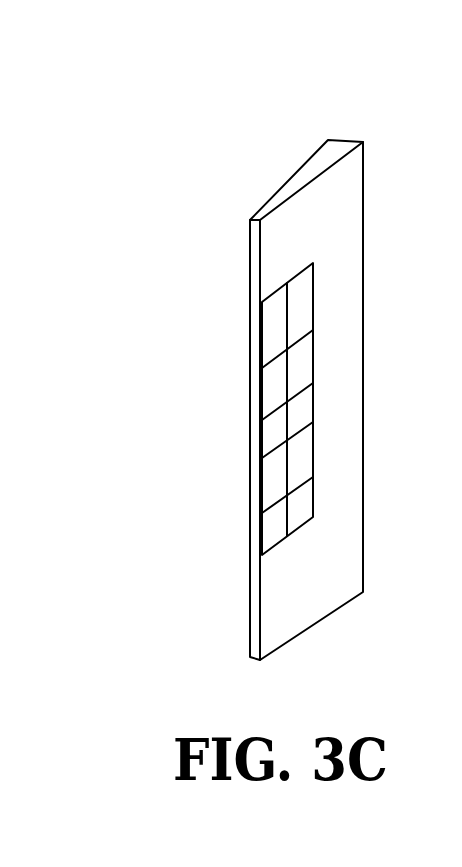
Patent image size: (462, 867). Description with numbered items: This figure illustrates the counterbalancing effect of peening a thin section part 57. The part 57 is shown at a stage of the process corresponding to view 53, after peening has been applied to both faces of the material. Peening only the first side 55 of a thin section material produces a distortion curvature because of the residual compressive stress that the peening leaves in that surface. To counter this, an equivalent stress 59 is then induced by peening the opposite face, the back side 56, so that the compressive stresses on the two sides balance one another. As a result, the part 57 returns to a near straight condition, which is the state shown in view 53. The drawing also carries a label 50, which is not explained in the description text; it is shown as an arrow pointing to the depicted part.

The test strip 50 is at (303, 352).
The view 53 is at (318, 167).
The first side 55 is at (250, 380).
The back side 56 is at (355, 372).
The part 57 is at (345, 239).
The equivalent stress 59 is at (276, 436).